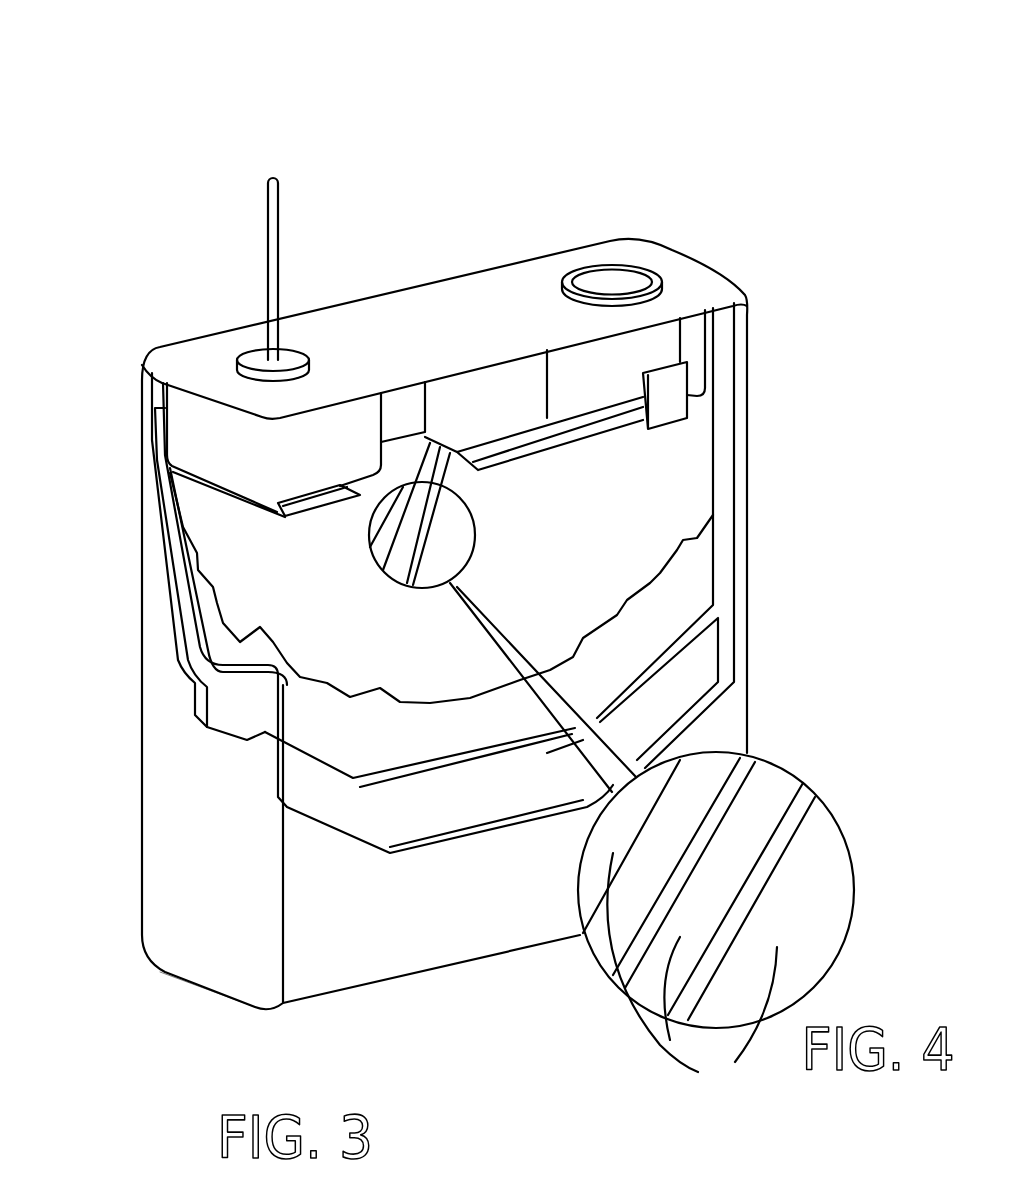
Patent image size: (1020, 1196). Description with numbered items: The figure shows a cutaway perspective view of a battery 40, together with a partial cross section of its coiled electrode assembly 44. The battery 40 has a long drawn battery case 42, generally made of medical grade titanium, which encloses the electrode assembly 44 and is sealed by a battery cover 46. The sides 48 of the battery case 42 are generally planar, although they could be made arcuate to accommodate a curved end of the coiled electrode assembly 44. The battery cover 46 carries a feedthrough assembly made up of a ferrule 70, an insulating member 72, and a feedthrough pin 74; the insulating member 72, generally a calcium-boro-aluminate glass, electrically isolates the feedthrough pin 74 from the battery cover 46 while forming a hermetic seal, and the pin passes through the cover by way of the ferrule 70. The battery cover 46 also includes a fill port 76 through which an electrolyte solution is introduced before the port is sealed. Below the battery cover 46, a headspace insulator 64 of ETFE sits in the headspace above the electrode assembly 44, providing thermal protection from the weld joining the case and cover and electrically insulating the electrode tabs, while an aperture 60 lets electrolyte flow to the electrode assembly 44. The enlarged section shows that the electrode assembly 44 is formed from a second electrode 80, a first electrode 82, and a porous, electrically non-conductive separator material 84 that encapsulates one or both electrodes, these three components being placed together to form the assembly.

In FIG. 3, the battery 40 is at (522, 98).
In FIG. 3, the battery case 42 is at (140, 852).
In FIG. 3, the electrode assembly 44 is at (650, 617).
In FIG. 3, the battery cover 46 is at (180, 365).
In FIG. 3, the sides 48 is at (317, 997).
In FIG. 3, the aperture 60 is at (670, 685).
In FIG. 3, the headspace insulator 64 is at (225, 455).
In FIG. 3, the ferrule 70 is at (312, 362).
In FIG. 3, the insulating member 72 is at (258, 360).
In FIG. 3, the feedthrough pin 74 is at (283, 253).
In FIG. 3, the fill port 76 is at (621, 287).
In FIG. 4, the second electrode 80 is at (707, 818).
In FIG. 3, the first electrode 82 is at (537, 551).
In FIG. 4, the first electrode 82 is at (772, 855).
In FIG. 3, the separator material 84 is at (615, 520).
In FIG. 4, the separator material 84 is at (692, 976).